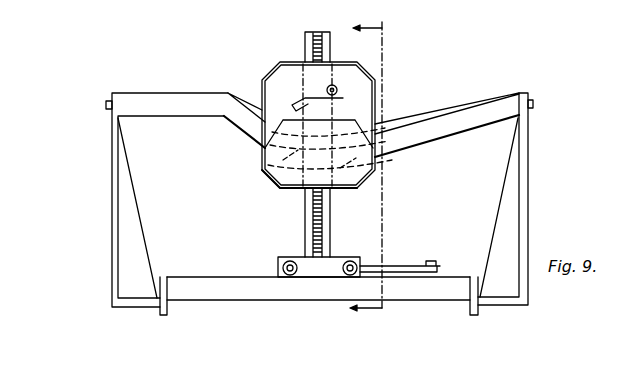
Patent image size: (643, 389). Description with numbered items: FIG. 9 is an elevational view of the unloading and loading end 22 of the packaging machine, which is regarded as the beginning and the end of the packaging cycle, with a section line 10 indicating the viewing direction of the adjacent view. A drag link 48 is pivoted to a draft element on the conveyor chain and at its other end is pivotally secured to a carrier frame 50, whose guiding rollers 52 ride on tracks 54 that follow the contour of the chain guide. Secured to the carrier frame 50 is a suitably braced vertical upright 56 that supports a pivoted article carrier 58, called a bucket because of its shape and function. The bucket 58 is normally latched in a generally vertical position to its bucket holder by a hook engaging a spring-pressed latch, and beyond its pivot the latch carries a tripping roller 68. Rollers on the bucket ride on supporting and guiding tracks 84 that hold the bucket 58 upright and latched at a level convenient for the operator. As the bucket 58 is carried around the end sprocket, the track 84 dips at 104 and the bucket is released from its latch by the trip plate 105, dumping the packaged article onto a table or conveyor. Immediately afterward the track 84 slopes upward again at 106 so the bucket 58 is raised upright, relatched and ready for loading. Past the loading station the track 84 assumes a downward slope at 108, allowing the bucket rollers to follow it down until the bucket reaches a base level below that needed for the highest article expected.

The section line 10 is at (381, 156).
The unloading and loading end 22 is at (502, 90).
The drag link 48 is at (408, 266).
The carrier frame 50 is at (347, 258).
The guiding rollers 52 is at (291, 258).
The tracks 54 is at (223, 264).
The vertical upright 56 is at (335, 211).
The article carrier 58 is at (272, 68).
The tripping roller 68 is at (335, 84).
The supporting and guiding tracks 84 is at (169, 99).
The dip 104 is at (263, 176).
The trip plate 105 is at (292, 100).
The upwardly sloping track 106 is at (448, 100).
The downwardly sloping track 108 is at (247, 123).